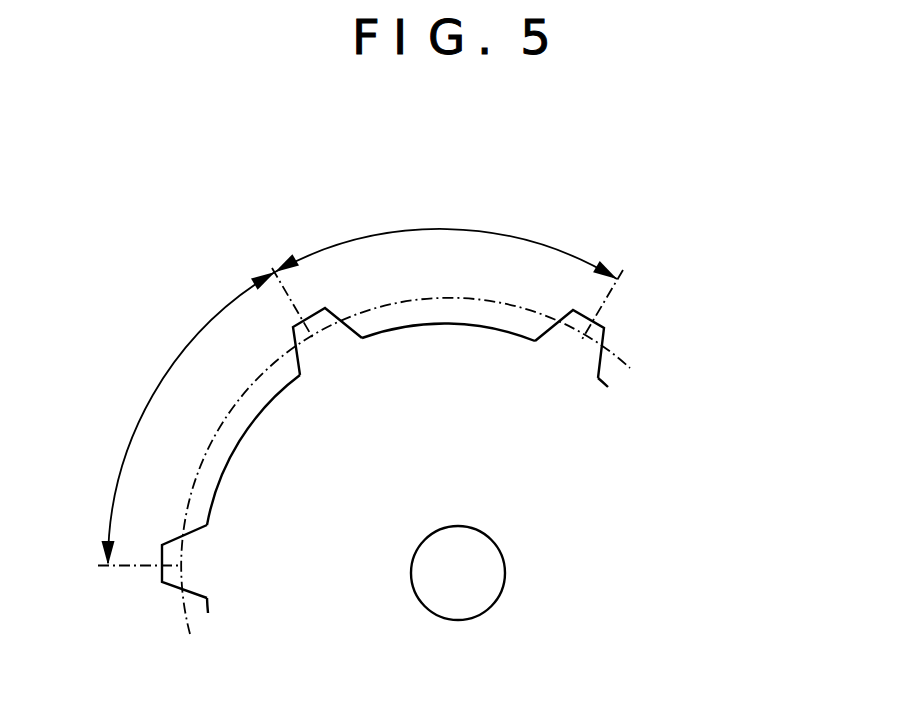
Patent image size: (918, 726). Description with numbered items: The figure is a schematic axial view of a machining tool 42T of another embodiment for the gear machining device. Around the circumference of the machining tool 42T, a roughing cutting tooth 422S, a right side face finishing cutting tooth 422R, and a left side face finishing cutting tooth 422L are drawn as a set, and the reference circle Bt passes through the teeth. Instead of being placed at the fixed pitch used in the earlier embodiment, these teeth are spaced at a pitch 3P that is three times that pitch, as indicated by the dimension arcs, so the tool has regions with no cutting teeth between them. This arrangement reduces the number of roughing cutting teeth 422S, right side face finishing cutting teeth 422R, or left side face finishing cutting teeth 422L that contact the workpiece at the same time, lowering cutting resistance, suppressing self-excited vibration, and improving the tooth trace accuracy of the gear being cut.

The machining tool 42T is at (723, 285).
The roughing cutting tooth 422S is at (162, 582).
The right side face finishing cutting tooth 422R is at (325, 308).
The left side face finishing cutting tooth 422L is at (605, 328).
The pitch circle / reference circle Bt is at (635, 353).
The pitch P3 3P is at (360, 385).